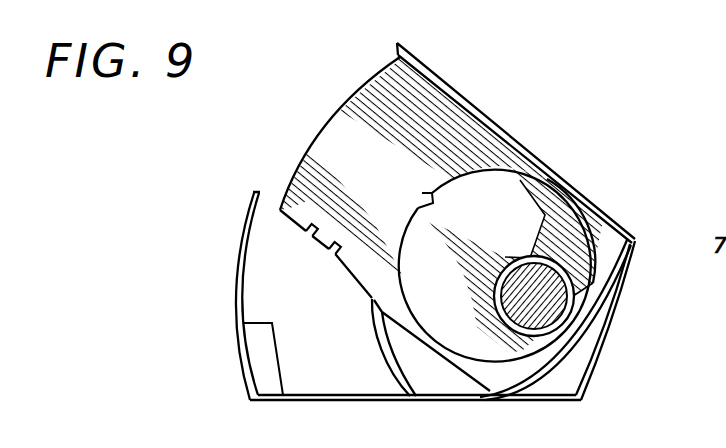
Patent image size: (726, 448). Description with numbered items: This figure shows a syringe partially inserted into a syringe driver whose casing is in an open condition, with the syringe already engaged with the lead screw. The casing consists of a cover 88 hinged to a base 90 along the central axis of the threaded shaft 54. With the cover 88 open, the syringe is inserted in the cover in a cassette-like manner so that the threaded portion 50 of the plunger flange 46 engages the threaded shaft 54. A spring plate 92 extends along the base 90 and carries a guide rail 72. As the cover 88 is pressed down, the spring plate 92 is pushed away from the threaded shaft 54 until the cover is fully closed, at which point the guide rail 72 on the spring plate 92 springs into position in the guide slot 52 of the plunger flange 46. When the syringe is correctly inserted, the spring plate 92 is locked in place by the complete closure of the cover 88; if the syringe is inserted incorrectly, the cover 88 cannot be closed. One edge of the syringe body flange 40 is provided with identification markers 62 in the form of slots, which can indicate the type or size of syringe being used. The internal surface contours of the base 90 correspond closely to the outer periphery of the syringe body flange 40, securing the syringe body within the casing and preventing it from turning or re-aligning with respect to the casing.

The syringe body flange 40 is at (373, 120).
The plunger flange 46 is at (600, 224).
The threaded portion 50 is at (536, 250).
The guide slot 52 is at (422, 193).
The threaded shaft 54 is at (543, 298).
The identification markers 62 is at (336, 252).
The guide rail 72 is at (374, 300).
The cover 88 is at (505, 130).
The base 90 is at (238, 308).
The spring plate 92 is at (388, 360).